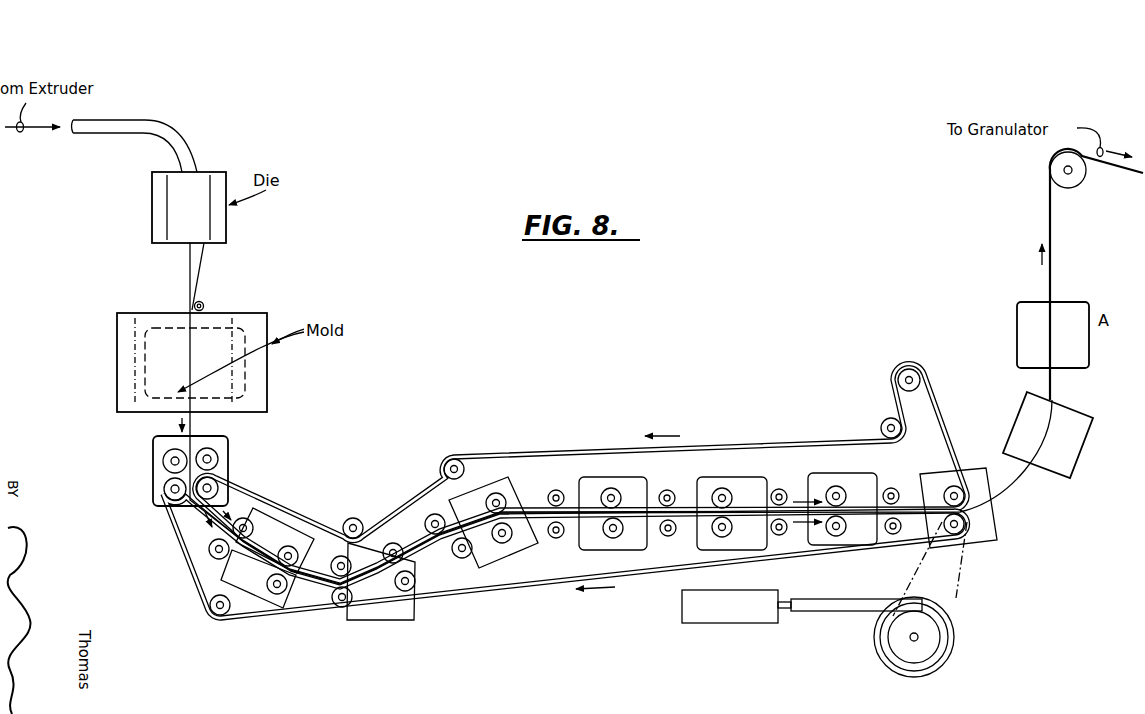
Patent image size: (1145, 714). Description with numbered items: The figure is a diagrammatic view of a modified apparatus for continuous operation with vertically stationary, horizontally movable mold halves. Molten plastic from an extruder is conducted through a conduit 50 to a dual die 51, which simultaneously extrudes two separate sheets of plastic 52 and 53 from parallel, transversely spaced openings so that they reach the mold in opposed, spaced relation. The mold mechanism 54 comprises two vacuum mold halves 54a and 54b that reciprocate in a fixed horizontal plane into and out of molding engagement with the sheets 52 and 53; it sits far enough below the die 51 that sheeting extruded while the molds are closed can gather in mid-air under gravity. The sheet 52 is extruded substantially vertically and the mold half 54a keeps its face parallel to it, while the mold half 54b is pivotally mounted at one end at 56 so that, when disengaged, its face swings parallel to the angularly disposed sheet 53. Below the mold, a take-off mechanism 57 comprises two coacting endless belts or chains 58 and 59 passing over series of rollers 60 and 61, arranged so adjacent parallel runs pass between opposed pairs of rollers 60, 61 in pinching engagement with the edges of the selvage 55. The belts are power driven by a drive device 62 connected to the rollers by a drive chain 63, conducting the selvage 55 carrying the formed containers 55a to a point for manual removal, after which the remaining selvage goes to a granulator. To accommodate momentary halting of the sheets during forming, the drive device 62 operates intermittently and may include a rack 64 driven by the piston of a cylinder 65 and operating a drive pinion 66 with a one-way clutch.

The conduit 50 is at (177, 135).
The dual die 51 is at (215, 186).
The sheet of plastic 52 is at (186, 269).
The sheet of plastic 53 is at (197, 277).
The mold mechanism 54 is at (203, 344).
The vacuum mold half 54a is at (125, 373).
The vacuum mold half 54b is at (255, 392).
The selvage 55 is at (195, 428).
The formed containers 55a is at (160, 447).
The pivot 56 is at (204, 304).
The take-off mechanism 57 is at (592, 448).
The endless belt or chain 58 is at (318, 520).
The endless belt or chain 59 is at (198, 583).
The rollers 60 is at (246, 519).
The rollers 61 is at (212, 549).
The drive device 62 is at (919, 643).
The drive chain 63 is at (955, 585).
The rack 64 is at (851, 598).
The cylinder 65 is at (726, 600).
The drive pinion 66 is at (904, 661).